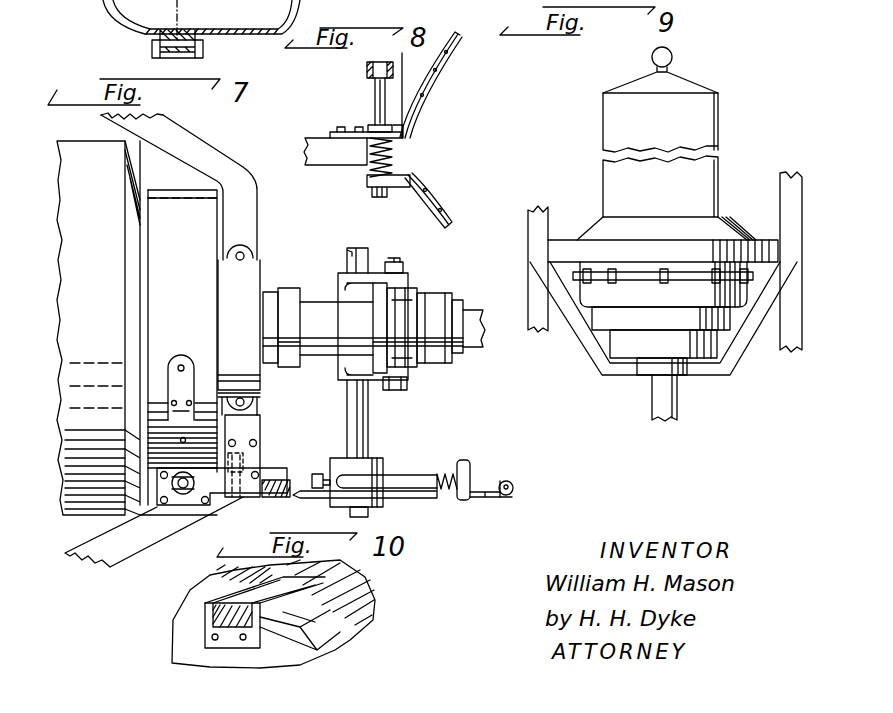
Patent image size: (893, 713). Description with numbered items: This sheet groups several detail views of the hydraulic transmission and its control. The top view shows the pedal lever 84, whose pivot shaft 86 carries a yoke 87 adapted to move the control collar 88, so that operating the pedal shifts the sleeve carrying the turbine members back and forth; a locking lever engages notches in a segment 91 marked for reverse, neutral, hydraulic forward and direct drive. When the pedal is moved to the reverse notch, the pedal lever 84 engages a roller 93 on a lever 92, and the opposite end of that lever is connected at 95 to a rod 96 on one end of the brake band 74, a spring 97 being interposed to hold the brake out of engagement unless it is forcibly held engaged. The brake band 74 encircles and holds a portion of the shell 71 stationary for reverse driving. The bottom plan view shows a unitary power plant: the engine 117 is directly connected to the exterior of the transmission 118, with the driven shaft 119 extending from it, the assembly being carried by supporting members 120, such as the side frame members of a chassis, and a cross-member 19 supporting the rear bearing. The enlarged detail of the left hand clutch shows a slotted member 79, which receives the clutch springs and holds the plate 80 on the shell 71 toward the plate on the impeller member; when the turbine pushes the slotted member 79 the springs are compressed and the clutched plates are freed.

In FIG. 7, the brake band 74 is at (195, 232).
In FIG. 8, the brake band 74 is at (426, 196).
In FIG. 7, the control collar 88 is at (393, 306).
In FIG. 7, the yoke 87 is at (377, 380).
In FIG. 7, the pivot shaft 86 is at (348, 418).
In FIG. 7, the pedal lever 84 is at (402, 480).
In FIG. 7, the roller 93 is at (283, 478).
In FIG. 7, the lever 92 is at (253, 487).
In FIG. 7, the segment 91 is at (427, 497).
In FIG. 8, the connection 95 is at (368, 72).
In FIG. 8, the rod 96 is at (381, 101).
In FIG. 8, the spring 97 is at (390, 152).
In FIG. 9, the engine 117 is at (699, 121).
In FIG. 9, the supporting members 120 is at (785, 197).
In FIG. 9, the transmission exterior 118 is at (633, 318).
In FIG. 9, the cross-member 19 is at (628, 368).
In FIG. 9, the driven shaft 119 is at (657, 412).
In FIG. 10, the slotted member 79 is at (218, 646).
In FIG. 10, the plate 80 is at (262, 656).
In FIG. 10, the shell 71 is at (373, 617).